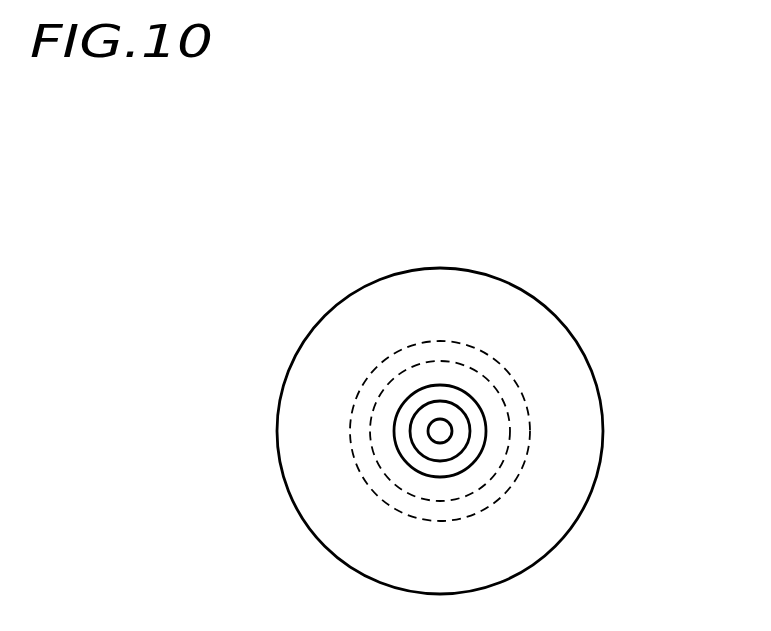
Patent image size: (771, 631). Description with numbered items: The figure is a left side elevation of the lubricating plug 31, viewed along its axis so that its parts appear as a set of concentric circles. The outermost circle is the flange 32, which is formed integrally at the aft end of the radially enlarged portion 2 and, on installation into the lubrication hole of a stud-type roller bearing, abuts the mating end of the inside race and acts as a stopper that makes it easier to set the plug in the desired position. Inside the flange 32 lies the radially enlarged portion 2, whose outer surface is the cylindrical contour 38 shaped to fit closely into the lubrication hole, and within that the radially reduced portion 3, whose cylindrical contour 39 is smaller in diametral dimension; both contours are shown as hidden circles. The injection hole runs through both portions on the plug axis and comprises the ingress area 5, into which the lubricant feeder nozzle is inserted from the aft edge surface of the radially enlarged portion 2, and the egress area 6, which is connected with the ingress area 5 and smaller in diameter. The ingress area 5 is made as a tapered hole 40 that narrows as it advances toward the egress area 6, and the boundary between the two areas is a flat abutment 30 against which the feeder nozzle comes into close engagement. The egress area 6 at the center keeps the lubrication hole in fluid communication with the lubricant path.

The lubricating plug 31 is at (547, 291).
The flange 32 is at (587, 451).
The cylindrical contour 38 is at (431, 342).
The radially reduced portion 3 is at (499, 417).
The radially enlarged portion 2 is at (518, 468).
The cylindrical contour 39 is at (484, 489).
The tapered hole 40 is at (425, 470).
The flat abutment 30 is at (423, 443).
The ingress area 5 is at (397, 424).
The egress area 6 is at (443, 427).